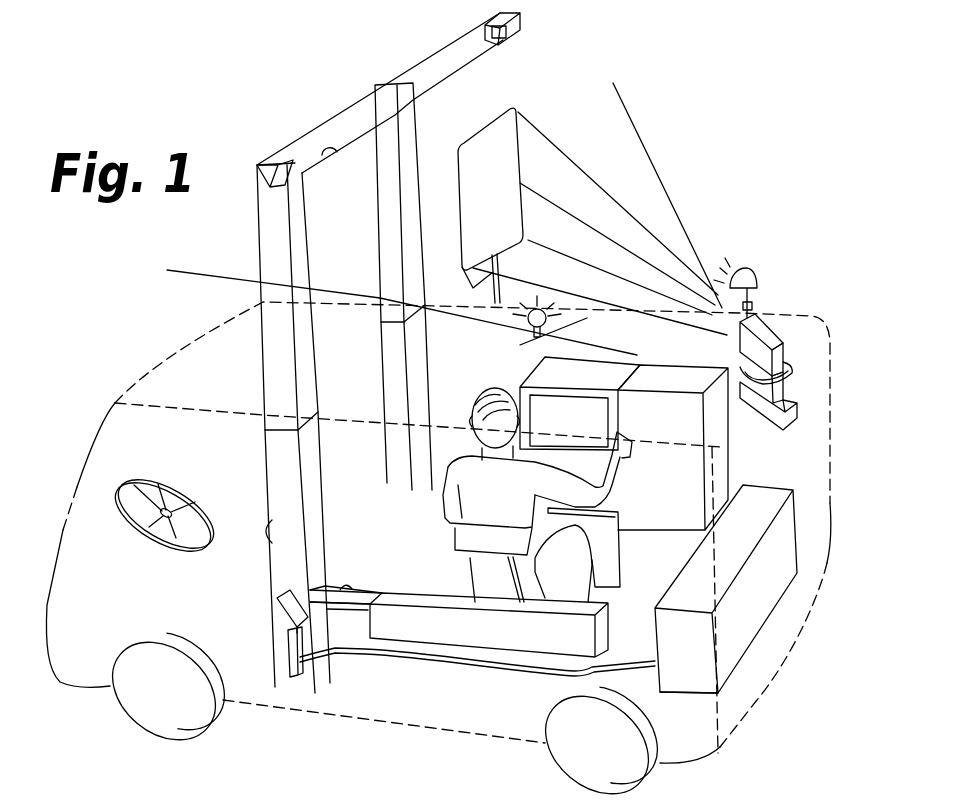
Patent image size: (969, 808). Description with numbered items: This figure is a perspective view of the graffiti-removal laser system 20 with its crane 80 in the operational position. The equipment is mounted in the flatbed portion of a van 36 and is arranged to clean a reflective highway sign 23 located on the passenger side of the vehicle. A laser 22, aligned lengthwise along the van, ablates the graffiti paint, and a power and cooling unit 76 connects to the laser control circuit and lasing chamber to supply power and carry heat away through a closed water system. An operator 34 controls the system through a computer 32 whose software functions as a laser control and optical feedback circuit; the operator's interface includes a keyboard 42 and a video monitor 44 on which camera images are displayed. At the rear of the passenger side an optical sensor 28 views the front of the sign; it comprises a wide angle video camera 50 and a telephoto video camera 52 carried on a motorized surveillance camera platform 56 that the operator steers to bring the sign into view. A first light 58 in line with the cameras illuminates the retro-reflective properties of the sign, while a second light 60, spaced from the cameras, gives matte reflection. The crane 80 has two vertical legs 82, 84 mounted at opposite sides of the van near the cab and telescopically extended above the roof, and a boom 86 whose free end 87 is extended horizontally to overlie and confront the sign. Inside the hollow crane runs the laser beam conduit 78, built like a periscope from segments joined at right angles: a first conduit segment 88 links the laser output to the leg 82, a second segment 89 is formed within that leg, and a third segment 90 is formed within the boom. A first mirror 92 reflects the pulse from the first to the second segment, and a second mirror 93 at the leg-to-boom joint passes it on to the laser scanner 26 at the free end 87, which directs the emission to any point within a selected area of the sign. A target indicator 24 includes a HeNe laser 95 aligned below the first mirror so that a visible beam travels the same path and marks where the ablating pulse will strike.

The laser system 20 is at (808, 519).
The laser 22 is at (620, 631).
The reflective highway sign 23 is at (518, 140).
The target indicator 24 is at (338, 674).
The laser scanner 26 is at (502, 26).
The optical sensor 28 is at (770, 316).
The computer 32 is at (733, 457).
The operator 34 is at (447, 506).
The van 36 is at (785, 658).
The keyboard 42 is at (605, 532).
The video monitor 44 is at (528, 374).
The wide angle video camera 50 is at (790, 385).
The telephoto video camera 52 is at (787, 355).
The motorized surveillance camera platform 56 is at (800, 411).
The first light 58 is at (750, 272).
The second light 60 is at (547, 332).
The power and cooling unit 76 is at (688, 694).
The laser beam conduit 78 is at (378, 584).
The crane 80 is at (250, 241).
The vertical leg 82 is at (322, 492).
The vertical leg 84 is at (430, 384).
The boom 86 is at (323, 120).
The free end 87 is at (520, 15).
The first conduit segment 88 is at (350, 585).
The second segment 89 is at (271, 541).
The third segment 90 is at (321, 163).
The first mirror 92 is at (278, 599).
The second mirror 93 is at (257, 165).
The HeNe laser 95 is at (288, 649).